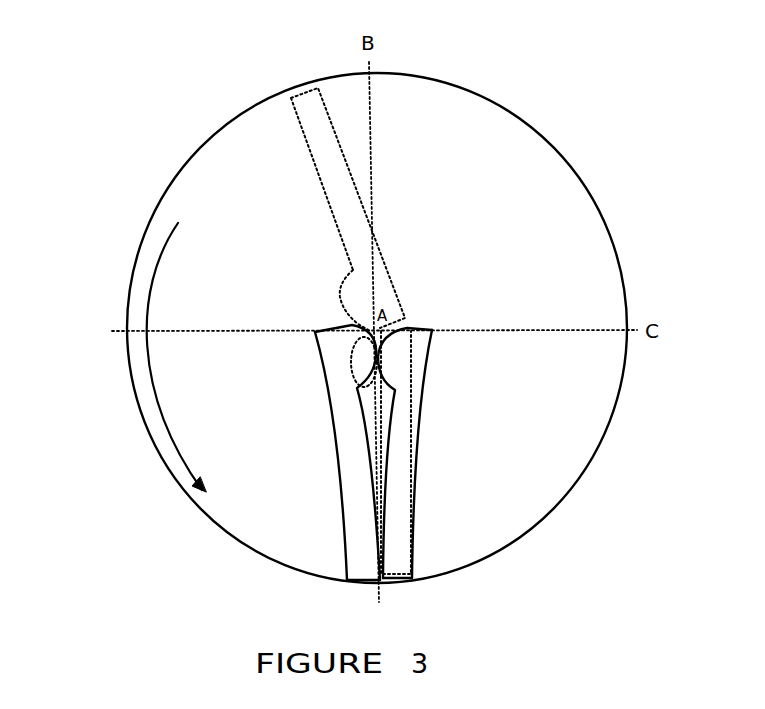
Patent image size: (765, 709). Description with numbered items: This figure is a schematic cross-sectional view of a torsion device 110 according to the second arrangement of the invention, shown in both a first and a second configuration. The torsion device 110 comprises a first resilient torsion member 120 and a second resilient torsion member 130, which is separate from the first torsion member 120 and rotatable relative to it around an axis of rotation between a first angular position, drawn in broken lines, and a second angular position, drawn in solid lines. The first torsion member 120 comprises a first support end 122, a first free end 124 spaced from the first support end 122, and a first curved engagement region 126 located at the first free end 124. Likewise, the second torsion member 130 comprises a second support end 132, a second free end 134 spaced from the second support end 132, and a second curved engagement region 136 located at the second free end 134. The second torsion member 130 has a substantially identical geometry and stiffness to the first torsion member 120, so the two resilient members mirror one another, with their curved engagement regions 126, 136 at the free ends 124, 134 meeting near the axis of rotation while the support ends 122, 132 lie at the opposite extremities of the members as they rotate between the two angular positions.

The torsion device 110 is at (100, 140).
The first resilient torsion member 120 is at (413, 483).
The first support end 122 is at (413, 576).
The first free end 124 is at (429, 344).
The first curved engagement region 126 is at (381, 352).
The second resilient torsion member 130 is at (352, 179).
The second support end 132 is at (347, 579).
The second free end 134 is at (318, 366).
The second curved engagement region 136 is at (338, 297).